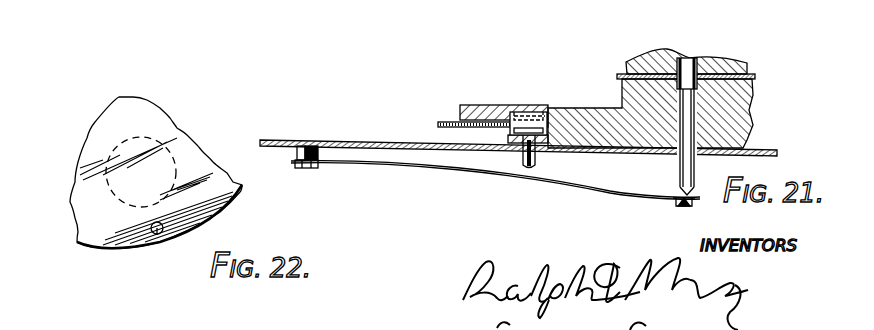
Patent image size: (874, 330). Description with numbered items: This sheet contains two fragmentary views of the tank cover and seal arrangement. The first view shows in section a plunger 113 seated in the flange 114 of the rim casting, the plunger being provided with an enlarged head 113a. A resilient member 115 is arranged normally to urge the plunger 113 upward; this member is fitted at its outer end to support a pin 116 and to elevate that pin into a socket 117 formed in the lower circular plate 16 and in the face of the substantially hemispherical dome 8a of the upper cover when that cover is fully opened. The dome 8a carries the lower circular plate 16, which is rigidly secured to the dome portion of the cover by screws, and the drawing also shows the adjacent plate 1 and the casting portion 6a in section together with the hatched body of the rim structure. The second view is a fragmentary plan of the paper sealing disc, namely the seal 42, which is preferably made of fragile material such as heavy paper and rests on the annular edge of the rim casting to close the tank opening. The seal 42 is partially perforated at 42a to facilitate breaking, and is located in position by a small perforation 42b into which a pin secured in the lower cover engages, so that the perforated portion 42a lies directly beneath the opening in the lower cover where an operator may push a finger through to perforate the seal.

In FIG. 21, the mounting plate 1 is at (397, 143).
In FIG. 21, the housing block 6a is at (743, 127).
In FIG. 21, the hemispherical dome 8a is at (727, 67).
In FIG. 21, the lower circular plate 16 is at (757, 78).
In FIG. 22, the seal 42 is at (227, 180).
In FIG. 22, the partially perforated portion 42a is at (160, 157).
In FIG. 22, the small perforation 42b is at (157, 236).
In FIG. 21, the plunger 113 is at (523, 160).
In FIG. 21, the enlarged head 113a is at (520, 113).
In FIG. 21, the flange 114 is at (453, 140).
In FIG. 21, the resilient member 115 is at (610, 193).
In FIG. 21, the pin 116 is at (680, 165).
In FIG. 21, the socket 117 is at (695, 65).